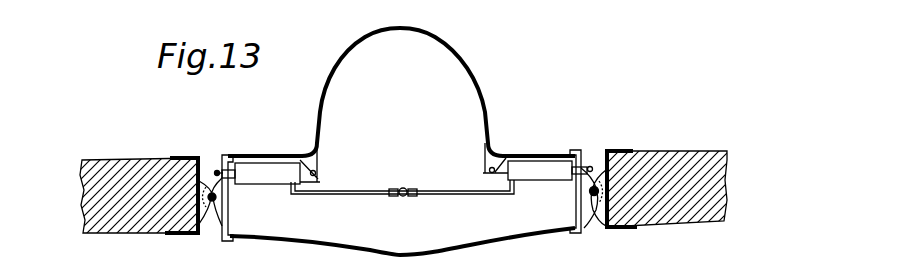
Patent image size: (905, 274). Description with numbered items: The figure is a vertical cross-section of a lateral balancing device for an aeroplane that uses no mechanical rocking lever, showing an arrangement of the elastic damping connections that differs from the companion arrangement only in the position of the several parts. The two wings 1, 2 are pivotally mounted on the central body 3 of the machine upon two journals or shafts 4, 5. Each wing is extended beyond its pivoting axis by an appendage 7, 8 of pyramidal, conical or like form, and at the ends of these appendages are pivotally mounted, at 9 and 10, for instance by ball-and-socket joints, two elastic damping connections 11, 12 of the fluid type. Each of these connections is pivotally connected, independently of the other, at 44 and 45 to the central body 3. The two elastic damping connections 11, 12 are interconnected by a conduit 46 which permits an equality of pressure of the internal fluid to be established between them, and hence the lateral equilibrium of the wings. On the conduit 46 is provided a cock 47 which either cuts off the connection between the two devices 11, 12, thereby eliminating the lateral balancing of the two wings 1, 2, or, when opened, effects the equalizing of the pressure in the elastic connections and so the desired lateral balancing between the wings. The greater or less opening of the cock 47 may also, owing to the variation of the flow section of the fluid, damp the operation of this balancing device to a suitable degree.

The wing 1 is at (665, 167).
The wing 2 is at (123, 187).
The central body 3 is at (480, 80).
The journal 4 is at (594, 198).
The journal 5 is at (207, 222).
The appendage 7 is at (594, 178).
The appendage 8 is at (203, 176).
The pivot 9 is at (592, 167).
The pivot 10 is at (219, 171).
The elastic damping connection 11 is at (520, 170).
The elastic damping connection 12 is at (260, 175).
The pivotal connection 44 is at (490, 167).
The pivotal connection 45 is at (320, 168).
The conduit 46 is at (357, 195).
The cock 47 is at (403, 197).